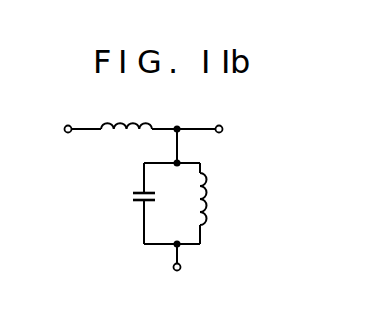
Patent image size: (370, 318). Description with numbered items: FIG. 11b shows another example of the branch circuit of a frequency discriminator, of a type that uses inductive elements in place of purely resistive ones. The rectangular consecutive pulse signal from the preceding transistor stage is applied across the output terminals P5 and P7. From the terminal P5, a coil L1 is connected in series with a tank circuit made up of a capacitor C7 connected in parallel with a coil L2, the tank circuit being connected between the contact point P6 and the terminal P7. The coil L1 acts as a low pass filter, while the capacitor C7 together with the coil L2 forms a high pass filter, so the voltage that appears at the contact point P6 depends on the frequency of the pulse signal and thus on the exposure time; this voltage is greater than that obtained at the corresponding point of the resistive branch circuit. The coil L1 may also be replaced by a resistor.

The output terminal P5 is at (67, 125).
The coil L1 is at (135, 122).
The contact point P6 is at (222, 127).
The capacitor C7 is at (132, 196).
The coil L2 is at (203, 210).
The output terminal P7 is at (181, 268).